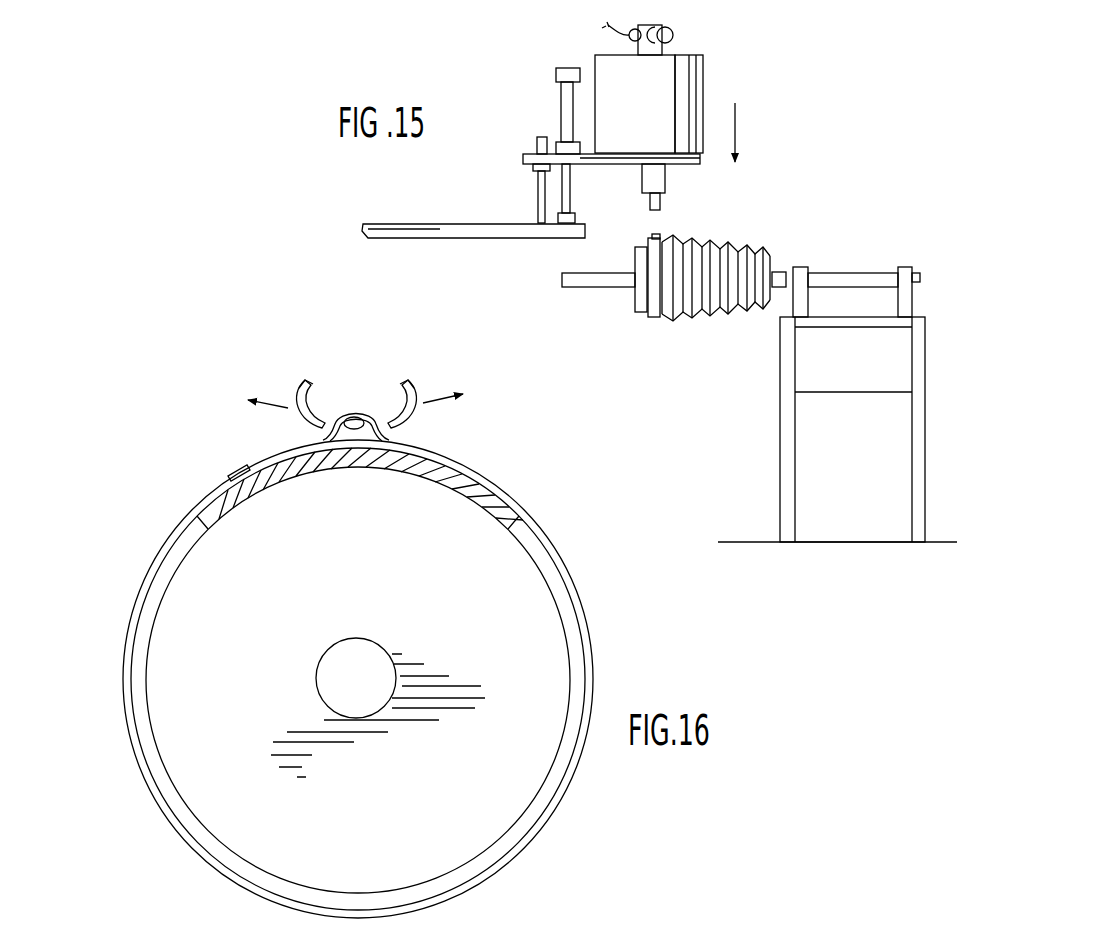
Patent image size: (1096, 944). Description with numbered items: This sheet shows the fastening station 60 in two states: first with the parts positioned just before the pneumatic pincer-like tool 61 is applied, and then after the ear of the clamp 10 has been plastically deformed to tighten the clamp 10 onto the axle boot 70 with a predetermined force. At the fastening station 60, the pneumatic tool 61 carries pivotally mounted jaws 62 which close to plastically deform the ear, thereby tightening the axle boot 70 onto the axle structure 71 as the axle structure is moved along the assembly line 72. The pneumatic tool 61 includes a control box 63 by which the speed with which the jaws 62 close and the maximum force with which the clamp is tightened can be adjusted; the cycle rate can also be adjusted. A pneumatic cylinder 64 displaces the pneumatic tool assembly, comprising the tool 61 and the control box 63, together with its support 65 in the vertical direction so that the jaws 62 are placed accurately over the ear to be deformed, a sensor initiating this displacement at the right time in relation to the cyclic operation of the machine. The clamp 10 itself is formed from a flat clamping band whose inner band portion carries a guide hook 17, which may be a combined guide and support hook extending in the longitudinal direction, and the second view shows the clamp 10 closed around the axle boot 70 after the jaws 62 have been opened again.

In FIG. 15, the clamp 10 is at (658, 317).
In FIG. 16, the clamp 10 is at (543, 531).
In FIG. 16, the guide hook 17 is at (228, 465).
In FIG. 15, the fastening station 60 is at (728, 173).
In FIG. 15, the pneumatic pincer-like tool 61 is at (665, 182).
In FIG. 15, the jaws 62 is at (661, 205).
In FIG. 16, the jaws 62 is at (393, 382).
In FIG. 15, the control box 63 is at (703, 70).
In FIG. 15, the pneumatic cylinder 64 is at (568, 100).
In FIG. 15, the support 65 is at (623, 163).
In FIG. 15, the axle boot 70 is at (720, 313).
In FIG. 16, the axle boot 70 is at (342, 457).
In FIG. 15, the axle structure 71 is at (857, 272).
In FIG. 15, the assembly line 72 is at (927, 340).